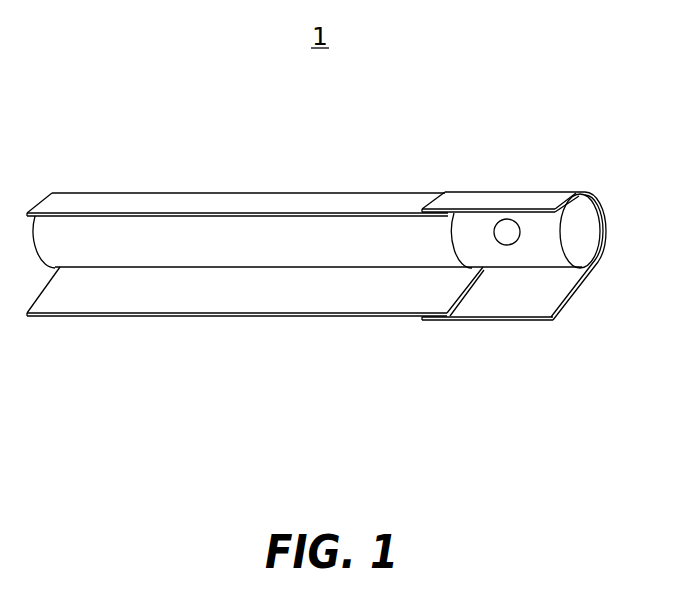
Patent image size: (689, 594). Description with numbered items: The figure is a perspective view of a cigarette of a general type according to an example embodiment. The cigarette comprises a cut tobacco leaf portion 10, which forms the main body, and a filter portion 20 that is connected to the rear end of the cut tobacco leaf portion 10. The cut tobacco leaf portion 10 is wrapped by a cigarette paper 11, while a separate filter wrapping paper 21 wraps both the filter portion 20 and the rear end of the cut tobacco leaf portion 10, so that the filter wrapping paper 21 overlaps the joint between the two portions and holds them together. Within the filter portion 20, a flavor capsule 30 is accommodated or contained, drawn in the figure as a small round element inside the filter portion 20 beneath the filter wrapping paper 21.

The cut tobacco leaf portion 10 is at (204, 252).
The cigarette paper 11 is at (342, 300).
The filter portion 20 is at (550, 233).
The filter wrapping paper 21 is at (528, 307).
The flavor capsule 30 is at (507, 231).